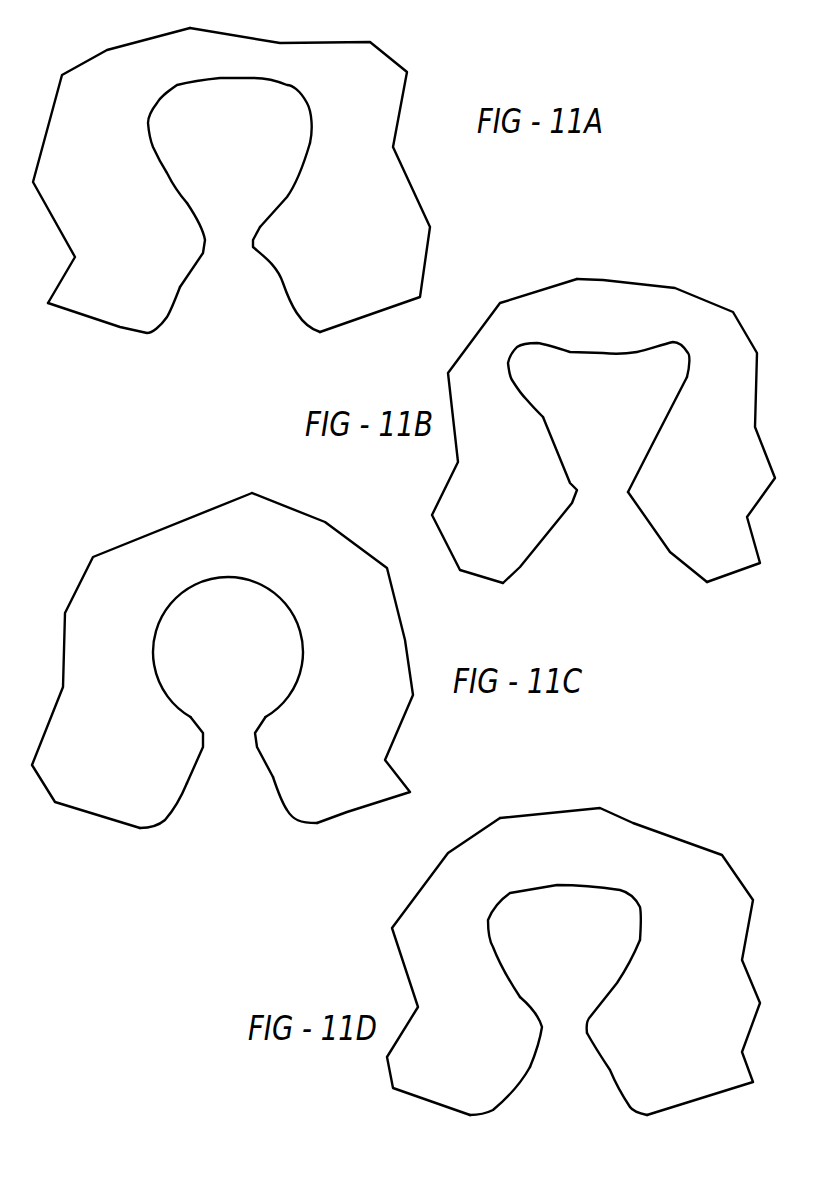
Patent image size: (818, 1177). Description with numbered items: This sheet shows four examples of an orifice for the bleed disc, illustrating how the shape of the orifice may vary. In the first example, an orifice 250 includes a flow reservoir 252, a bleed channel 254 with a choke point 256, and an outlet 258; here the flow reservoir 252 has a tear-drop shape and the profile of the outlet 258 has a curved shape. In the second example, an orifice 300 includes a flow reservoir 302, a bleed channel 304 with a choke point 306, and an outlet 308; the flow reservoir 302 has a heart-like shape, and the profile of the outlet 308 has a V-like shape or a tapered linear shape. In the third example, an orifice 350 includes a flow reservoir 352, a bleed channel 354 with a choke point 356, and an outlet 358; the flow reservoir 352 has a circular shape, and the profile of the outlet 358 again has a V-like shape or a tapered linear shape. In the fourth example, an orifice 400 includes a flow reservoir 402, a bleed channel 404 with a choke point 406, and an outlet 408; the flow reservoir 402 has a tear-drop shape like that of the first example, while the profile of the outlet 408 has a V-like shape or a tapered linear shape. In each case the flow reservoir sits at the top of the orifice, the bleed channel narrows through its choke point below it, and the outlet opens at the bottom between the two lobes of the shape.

In FIG. 11A, the orifice 250 is at (316, 77).
In FIG. 11A, the flow reservoir 252 is at (228, 142).
In FIG. 11A, the bleed channel 254 is at (231, 232).
In FIG. 11A, the choke point 256 is at (198, 245).
In FIG. 11A, the outlet 258 is at (252, 315).
In FIG. 11B, the orifice 300 is at (632, 331).
In FIG. 11B, the flow reservoir 302 is at (644, 388).
In FIG. 11B, the bleed channel 304 is at (602, 458).
In FIG. 11B, the choke point 306 is at (636, 491).
In FIG. 11B, the outlet 308 is at (590, 571).
In FIG. 11C, the orifice 350 is at (182, 578).
In FIG. 11C, the flow reservoir 352 is at (190, 631).
In FIG. 11C, the bleed channel 354 is at (233, 716).
In FIG. 11C, the choke point 356 is at (200, 740).
In FIG. 11C, the outlet 358 is at (239, 799).
In FIG. 11D, the orifice 400 is at (594, 870).
In FIG. 11D, the flow reservoir 402 is at (590, 923).
In FIG. 11D, the bleed channel 404 is at (569, 1016).
In FIG. 11D, the choke point 406 is at (535, 1027).
In FIG. 11D, the outlet 408 is at (582, 1087).